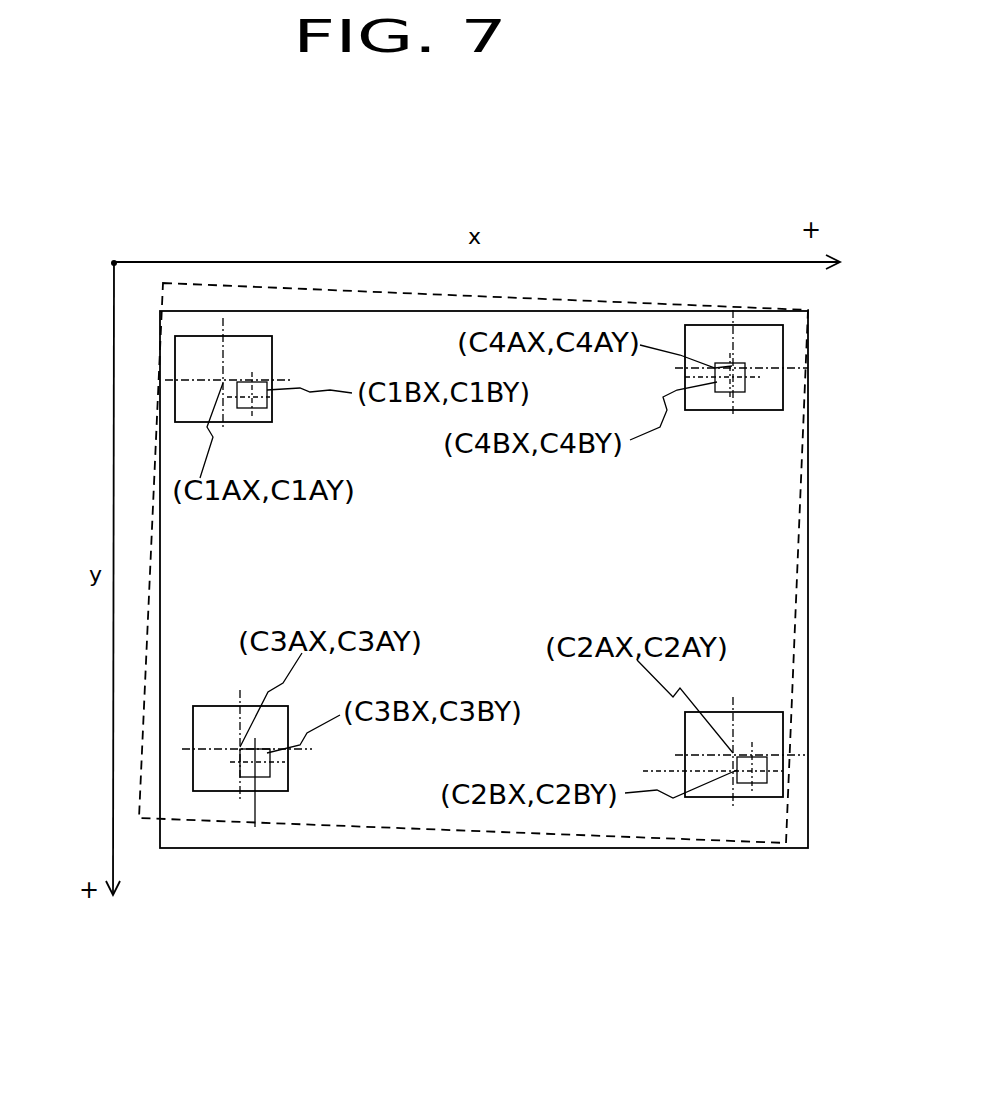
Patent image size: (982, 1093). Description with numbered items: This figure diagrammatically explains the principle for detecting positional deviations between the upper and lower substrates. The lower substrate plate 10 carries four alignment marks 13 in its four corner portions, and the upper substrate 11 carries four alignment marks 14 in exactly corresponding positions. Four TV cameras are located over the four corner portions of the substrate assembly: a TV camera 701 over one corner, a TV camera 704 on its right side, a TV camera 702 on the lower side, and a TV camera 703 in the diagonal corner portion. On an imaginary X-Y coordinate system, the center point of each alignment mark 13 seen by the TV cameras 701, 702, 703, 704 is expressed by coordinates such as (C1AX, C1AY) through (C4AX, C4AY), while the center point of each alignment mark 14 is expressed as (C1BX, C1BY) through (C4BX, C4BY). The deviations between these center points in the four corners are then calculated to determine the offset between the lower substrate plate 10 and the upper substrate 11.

The lower substrate plate 10 is at (473, 654).
The upper substrate 11 is at (484, 683).
The alignment mark 13 is at (486, 558).
The alignment mark 14 is at (509, 590).
The TV camera 701 is at (195, 288).
The TV camera 702 is at (765, 872).
The TV camera 703 is at (168, 875).
The TV camera 704 is at (790, 287).